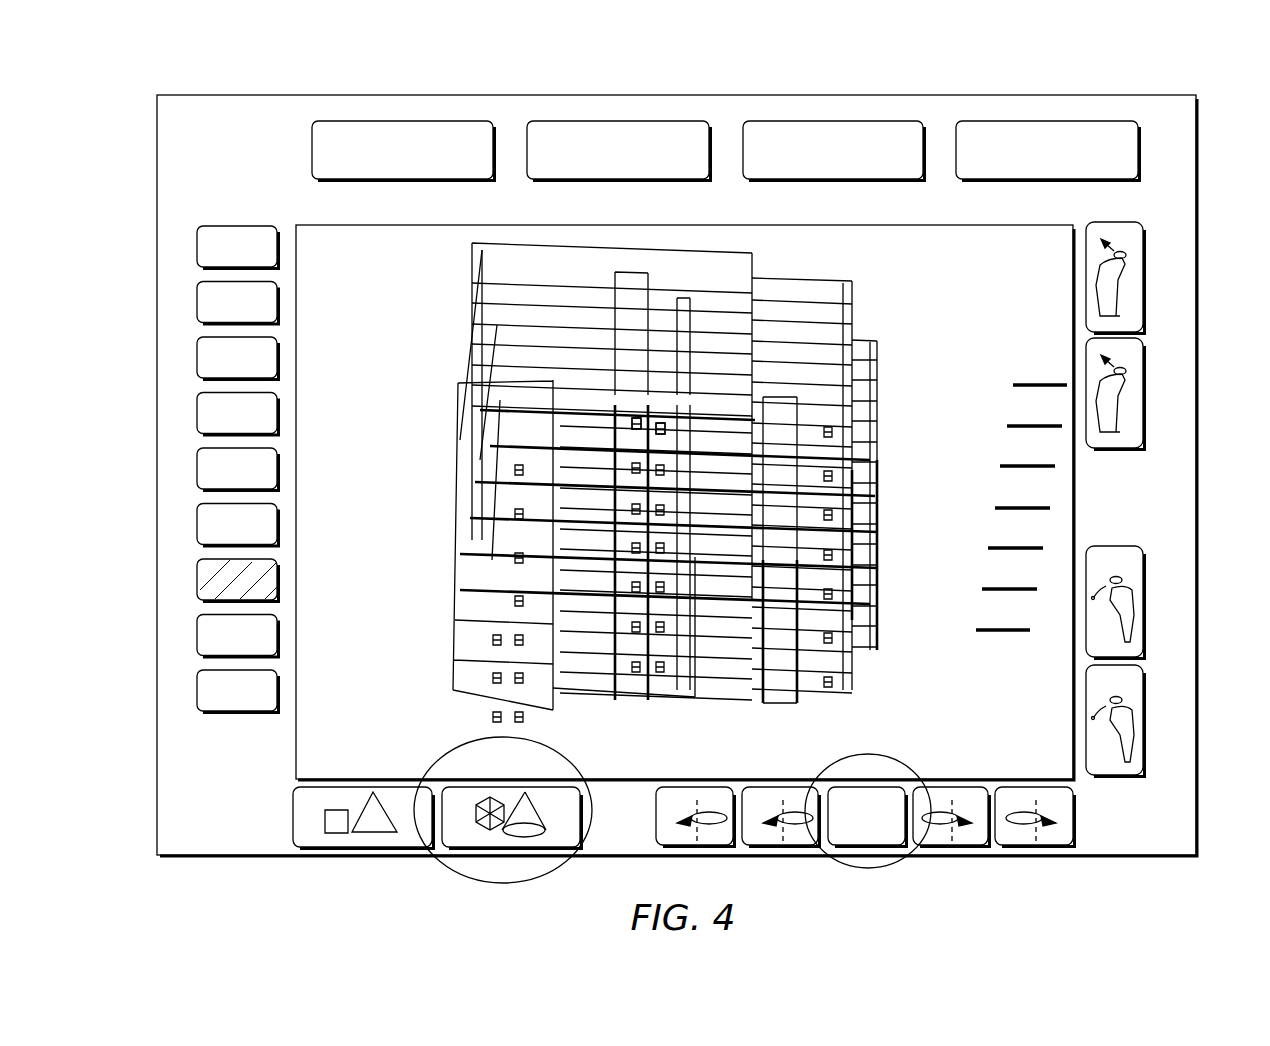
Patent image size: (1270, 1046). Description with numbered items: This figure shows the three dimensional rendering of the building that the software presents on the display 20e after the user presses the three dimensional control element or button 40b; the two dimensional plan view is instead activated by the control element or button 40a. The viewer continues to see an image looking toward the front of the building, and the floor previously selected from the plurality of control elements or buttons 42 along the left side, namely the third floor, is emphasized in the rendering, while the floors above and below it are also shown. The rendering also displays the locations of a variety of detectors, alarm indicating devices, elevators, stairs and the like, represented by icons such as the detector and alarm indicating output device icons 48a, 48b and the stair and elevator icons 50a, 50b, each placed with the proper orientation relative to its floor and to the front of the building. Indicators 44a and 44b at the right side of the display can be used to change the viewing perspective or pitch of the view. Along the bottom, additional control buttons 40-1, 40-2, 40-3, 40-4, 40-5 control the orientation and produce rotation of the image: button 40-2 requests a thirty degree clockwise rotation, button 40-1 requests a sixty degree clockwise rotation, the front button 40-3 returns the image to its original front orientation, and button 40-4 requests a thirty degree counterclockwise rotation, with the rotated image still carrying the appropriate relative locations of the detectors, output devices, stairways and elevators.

The display 20e is at (1204, 167).
The floor selection buttons 42 is at (253, 738).
The pitch indicator 44a is at (1124, 462).
The pitch indicator 44b is at (1056, 687).
The two dimensional view button 40a is at (373, 786).
The three dimensional view button 40b is at (447, 751).
The sixty degree clockwise rotation button 40-1 is at (694, 786).
The thirty degree clockwise rotation button 40-2 is at (782, 786).
The front control button 40-3 is at (868, 752).
The thirty degree counterclockwise rotation button 40-4 is at (952, 786).
The rotation control button 40-5 is at (1036, 786).
The detector icon 48a is at (633, 425).
The alarm indicating output device icon 48b is at (660, 428).
The stair icon 50a is at (640, 417).
The elevator icon 50b is at (667, 430).